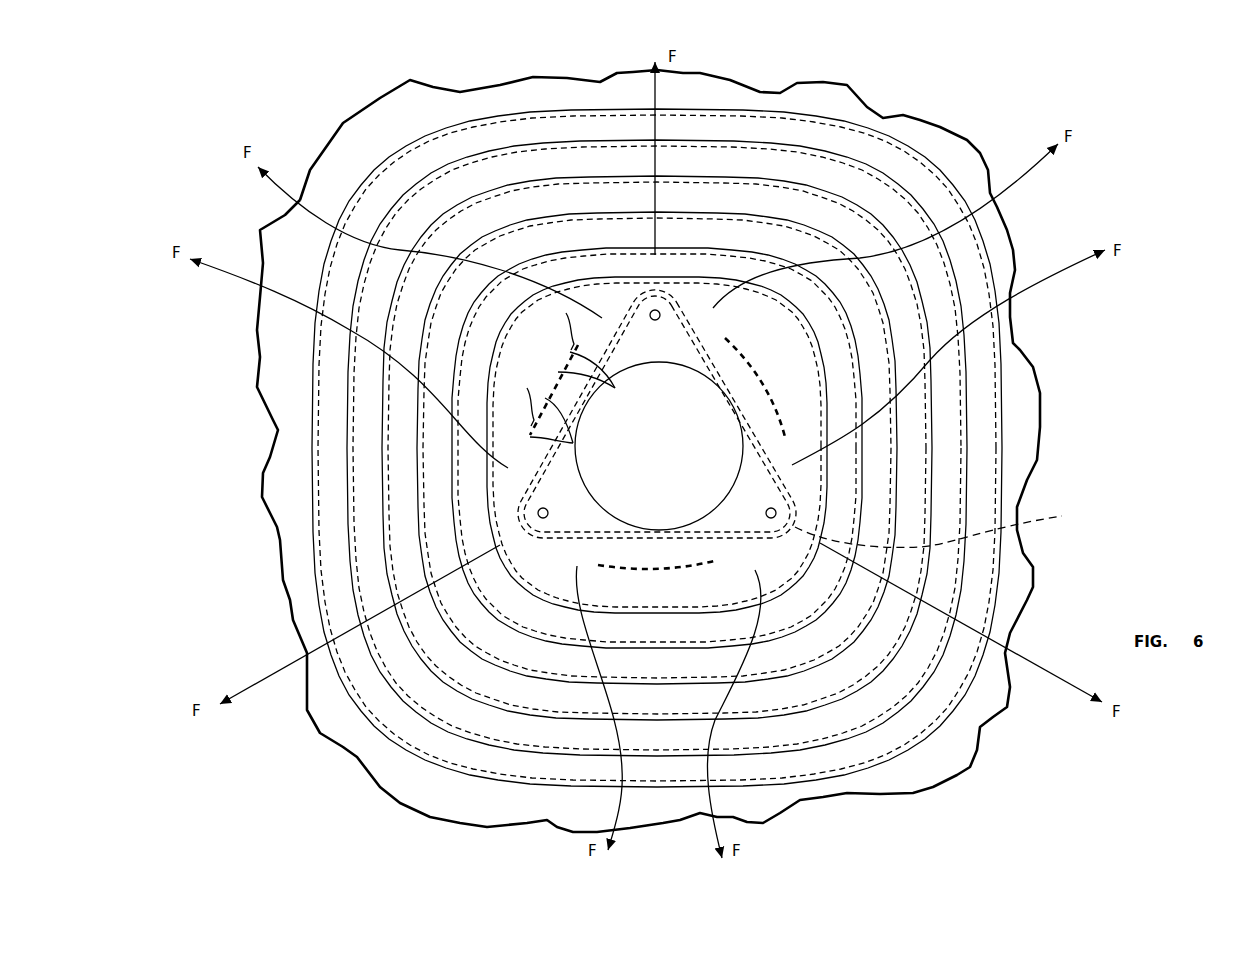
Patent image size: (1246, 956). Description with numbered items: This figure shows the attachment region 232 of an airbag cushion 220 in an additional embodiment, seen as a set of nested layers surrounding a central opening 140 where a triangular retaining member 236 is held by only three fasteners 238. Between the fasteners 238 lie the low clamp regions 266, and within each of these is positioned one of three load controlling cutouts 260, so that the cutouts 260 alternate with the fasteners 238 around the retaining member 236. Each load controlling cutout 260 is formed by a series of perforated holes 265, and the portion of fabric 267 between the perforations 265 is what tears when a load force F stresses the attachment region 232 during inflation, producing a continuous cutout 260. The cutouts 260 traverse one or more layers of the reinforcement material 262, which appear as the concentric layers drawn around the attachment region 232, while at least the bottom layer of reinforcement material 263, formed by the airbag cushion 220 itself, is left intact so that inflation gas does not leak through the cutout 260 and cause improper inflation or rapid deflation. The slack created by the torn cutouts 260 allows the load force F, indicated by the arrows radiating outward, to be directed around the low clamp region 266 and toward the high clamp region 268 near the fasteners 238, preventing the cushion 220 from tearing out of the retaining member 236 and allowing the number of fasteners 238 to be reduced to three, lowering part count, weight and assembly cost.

The central opening 140 is at (641, 451).
The airbag cushion 220 is at (960, 155).
The attachment region 232 is at (1122, 186).
The retaining member 236 is at (947, 529).
The fasteners 238 is at (659, 310).
The load controlling cutouts 260 is at (547, 374).
The reinforcement material 262 is at (440, 94).
The bottom layer of reinforcement material 263 is at (1035, 430).
The perforated holes 265 is at (615, 388).
The low clamp regions 266 is at (506, 360).
The portion of fabric 267 is at (566, 313).
The high clamp region 268 is at (598, 305).